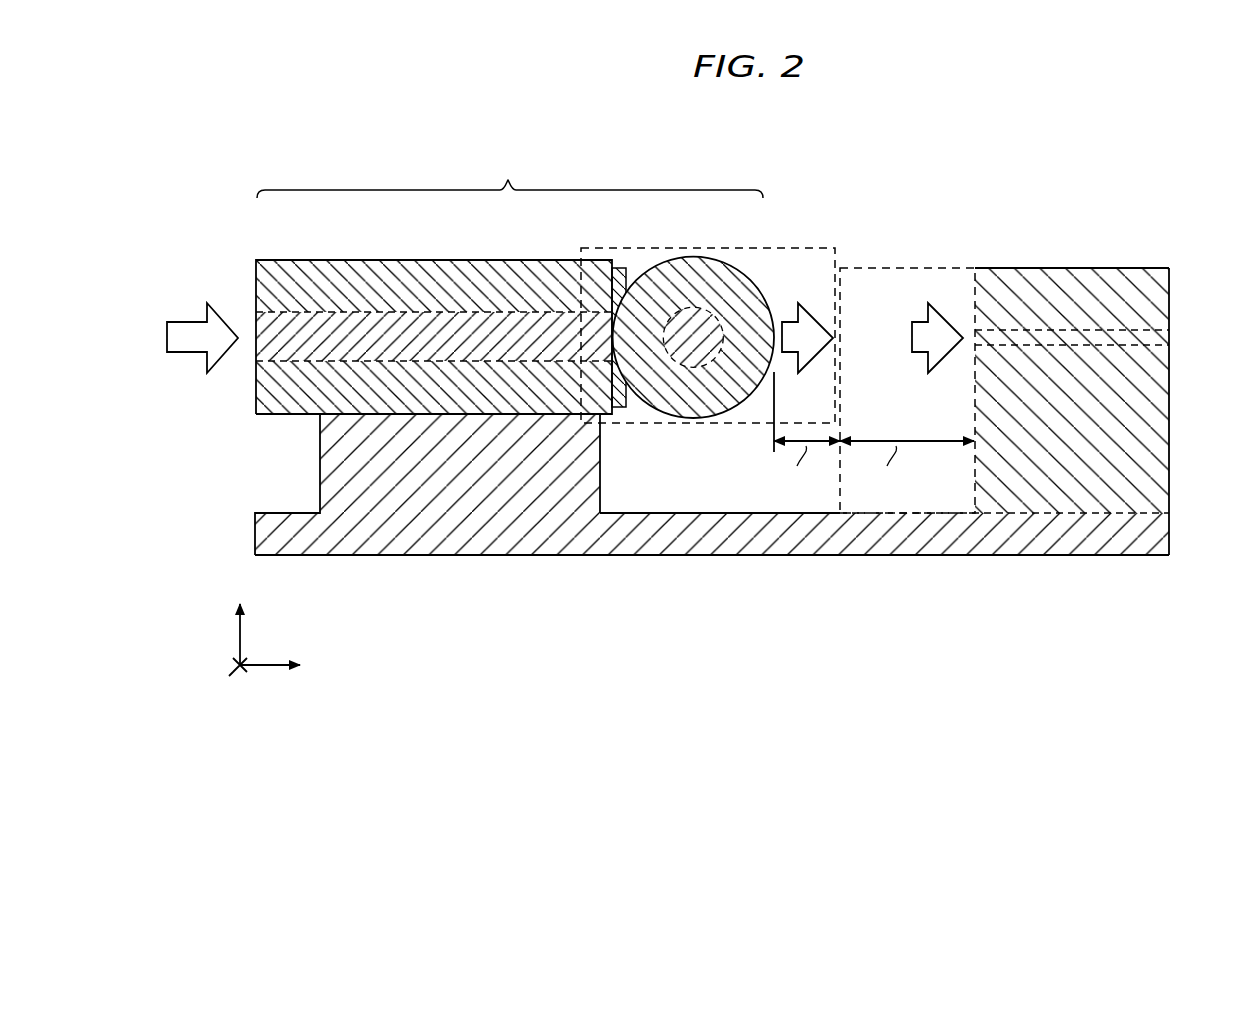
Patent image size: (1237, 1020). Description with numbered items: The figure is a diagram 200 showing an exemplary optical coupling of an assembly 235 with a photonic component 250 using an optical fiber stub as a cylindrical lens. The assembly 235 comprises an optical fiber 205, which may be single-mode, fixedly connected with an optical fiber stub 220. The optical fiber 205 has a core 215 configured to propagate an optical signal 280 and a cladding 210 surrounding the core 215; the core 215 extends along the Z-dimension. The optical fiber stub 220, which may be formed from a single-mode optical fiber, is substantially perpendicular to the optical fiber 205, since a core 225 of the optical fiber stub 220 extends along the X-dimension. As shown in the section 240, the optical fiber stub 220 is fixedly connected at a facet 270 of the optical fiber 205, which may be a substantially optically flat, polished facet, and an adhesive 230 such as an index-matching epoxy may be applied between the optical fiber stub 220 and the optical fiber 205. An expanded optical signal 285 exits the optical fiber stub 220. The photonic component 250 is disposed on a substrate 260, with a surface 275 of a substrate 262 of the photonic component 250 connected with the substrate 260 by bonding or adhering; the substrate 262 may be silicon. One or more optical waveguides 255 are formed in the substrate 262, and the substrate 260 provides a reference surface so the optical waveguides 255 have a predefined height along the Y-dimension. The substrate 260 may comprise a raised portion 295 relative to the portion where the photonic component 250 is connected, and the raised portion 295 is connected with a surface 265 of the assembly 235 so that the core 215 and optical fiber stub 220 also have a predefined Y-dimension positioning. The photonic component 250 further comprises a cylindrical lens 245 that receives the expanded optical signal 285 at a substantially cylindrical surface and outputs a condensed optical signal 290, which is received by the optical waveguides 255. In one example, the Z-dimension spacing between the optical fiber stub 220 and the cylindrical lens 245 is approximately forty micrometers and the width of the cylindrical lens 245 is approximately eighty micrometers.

The diagram 200 is at (1125, 147).
The optical fiber 205 is at (271, 422).
The cladding 210 is at (357, 259).
The core 215 is at (437, 311).
The optical fiber stub 220 is at (723, 258).
The core 225 is at (722, 330).
The adhesive 230 is at (627, 268).
The assembly 235 is at (509, 282).
The section 240 is at (809, 248).
The cylindrical lens 245 is at (915, 268).
The photonic component 250 is at (1050, 267).
The optical waveguides 255 is at (1163, 337).
The substrate 260 is at (533, 542).
The substrate 262 is at (1105, 444).
The surface 265 is at (350, 417).
The facet 270 is at (614, 408).
The surface 275 is at (920, 515).
The optical signal 280 is at (185, 321).
The expanded optical signal 285 is at (815, 356).
The condensed optical signal 290 is at (945, 356).
The raised portion 295 is at (567, 488).